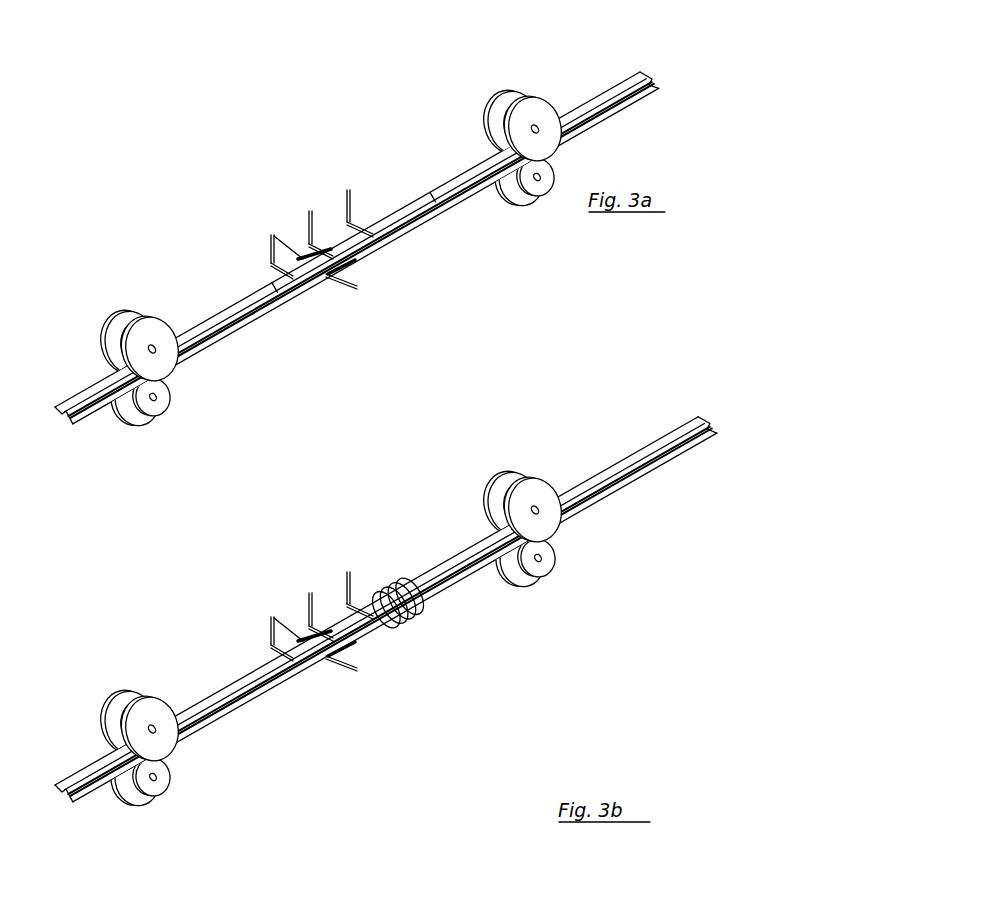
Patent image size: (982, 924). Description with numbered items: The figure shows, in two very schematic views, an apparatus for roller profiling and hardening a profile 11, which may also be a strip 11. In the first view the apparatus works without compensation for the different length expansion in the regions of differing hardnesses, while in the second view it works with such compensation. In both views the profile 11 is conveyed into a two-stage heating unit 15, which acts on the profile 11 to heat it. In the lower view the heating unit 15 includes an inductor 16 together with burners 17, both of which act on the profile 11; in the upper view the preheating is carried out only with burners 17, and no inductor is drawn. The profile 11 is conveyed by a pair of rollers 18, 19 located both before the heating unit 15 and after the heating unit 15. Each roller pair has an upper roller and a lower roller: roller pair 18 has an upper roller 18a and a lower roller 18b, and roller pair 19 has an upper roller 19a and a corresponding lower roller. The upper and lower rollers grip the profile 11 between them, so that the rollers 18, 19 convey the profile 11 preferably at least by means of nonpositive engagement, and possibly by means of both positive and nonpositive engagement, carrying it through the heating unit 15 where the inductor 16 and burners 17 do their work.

In FIG. 3A, the profile 11 is at (613, 75).
In FIG. 3B, the profile 11 is at (667, 418).
In FIG. 3A, the heating unit 15 is at (307, 192).
In FIG. 3B, the heating unit 15 is at (307, 595).
In FIG. 3B, the inductor 16 is at (417, 630).
In FIG. 3A, the burner 17 is at (268, 249).
In FIG. 3B, the burner 17 is at (295, 638).
In FIG. 3A, the pair of rollers 18 is at (527, 154).
In FIG. 3B, the pair of rollers 18 is at (545, 605).
In FIG. 3A, the upper roller 18a is at (527, 98).
In FIG. 3A, the lower roller 18b is at (556, 168).
In FIG. 3A, the pair of rollers 19 is at (148, 376).
In FIG. 3B, the pair of rollers 19 is at (152, 822).
In FIG. 3A, the upper roller 19a is at (157, 325).